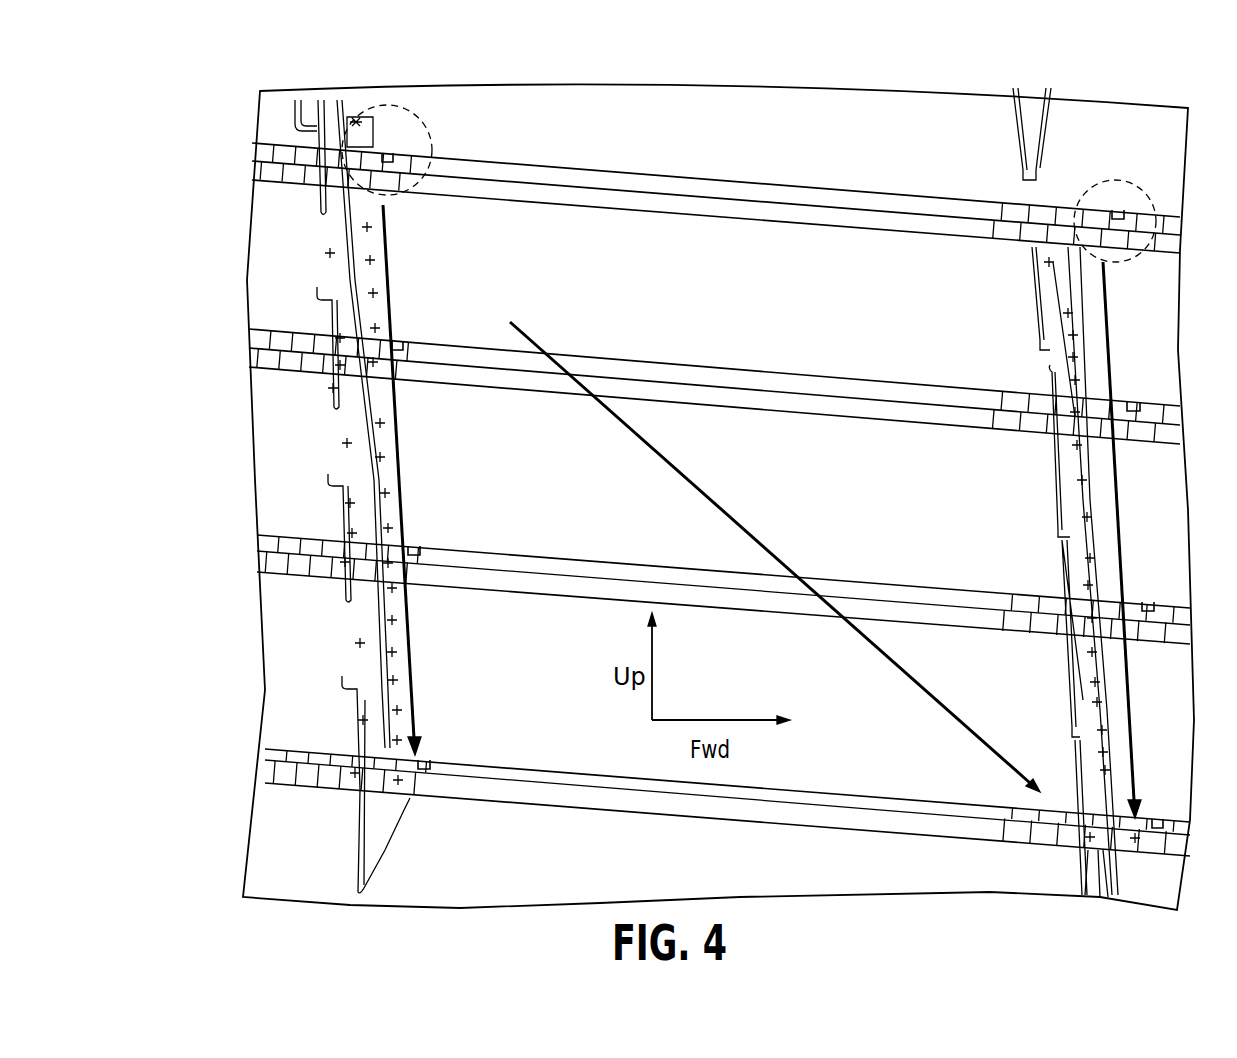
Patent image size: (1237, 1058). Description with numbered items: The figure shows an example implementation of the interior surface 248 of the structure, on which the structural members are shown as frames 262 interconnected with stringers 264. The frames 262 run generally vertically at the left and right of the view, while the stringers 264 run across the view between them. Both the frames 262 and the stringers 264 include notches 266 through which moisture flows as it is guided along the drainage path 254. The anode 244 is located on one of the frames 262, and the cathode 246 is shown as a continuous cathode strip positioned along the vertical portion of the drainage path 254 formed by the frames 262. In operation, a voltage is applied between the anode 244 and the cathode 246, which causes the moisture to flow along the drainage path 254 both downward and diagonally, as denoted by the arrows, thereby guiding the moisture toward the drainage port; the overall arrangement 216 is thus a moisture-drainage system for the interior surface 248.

The fuselage skin panel assembly 216 is at (203, 132).
The anode 244 is at (316, 475).
The cathode 246 is at (1120, 488).
The interior surface 248 is at (706, 130).
The drainage path 254 is at (389, 243).
The frame 262 is at (1065, 875).
The stringer 264 is at (875, 798).
The notch 266 is at (1160, 819).